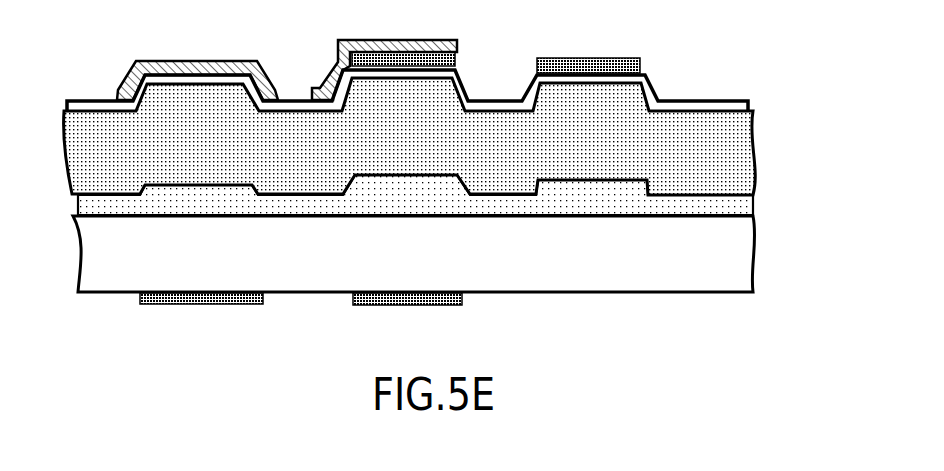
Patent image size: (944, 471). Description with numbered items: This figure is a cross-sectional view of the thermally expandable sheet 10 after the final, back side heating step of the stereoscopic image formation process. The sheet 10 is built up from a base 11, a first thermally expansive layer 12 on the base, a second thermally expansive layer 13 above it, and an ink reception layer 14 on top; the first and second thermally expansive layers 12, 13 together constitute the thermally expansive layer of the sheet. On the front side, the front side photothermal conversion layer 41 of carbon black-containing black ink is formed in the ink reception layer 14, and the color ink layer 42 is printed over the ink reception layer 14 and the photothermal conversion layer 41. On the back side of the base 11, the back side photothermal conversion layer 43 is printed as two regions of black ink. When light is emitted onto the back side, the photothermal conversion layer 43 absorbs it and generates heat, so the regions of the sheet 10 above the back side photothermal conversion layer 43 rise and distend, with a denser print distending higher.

The thermally expandable sheet 10 is at (822, 76).
The base 11 is at (742, 252).
The first thermally expansive layer 12 is at (735, 208).
The second thermally expansive layer 13 is at (735, 157).
The ink reception layer 14 is at (717, 103).
The front side photothermal conversion layer 41 is at (452, 60).
The color ink layer 42 is at (185, 60).
The back side photothermal conversion layer 43 is at (213, 305).